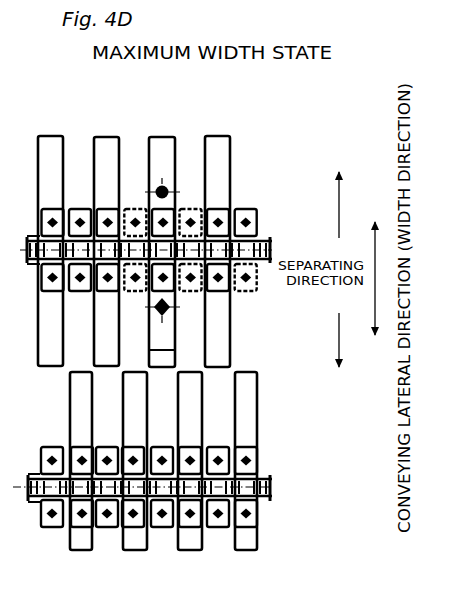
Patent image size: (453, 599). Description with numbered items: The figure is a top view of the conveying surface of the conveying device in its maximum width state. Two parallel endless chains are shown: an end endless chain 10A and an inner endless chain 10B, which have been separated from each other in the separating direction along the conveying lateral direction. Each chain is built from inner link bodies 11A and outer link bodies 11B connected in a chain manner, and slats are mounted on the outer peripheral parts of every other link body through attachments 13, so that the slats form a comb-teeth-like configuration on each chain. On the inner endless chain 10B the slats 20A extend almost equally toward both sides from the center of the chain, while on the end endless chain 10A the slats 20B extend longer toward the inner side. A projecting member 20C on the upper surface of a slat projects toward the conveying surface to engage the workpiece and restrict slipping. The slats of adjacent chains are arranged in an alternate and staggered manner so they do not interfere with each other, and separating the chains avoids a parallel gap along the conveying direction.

The endless chain 10A is at (274, 506).
The endless chain 10B is at (266, 235).
The inner link body 11A is at (78, 200).
The outer link body 11B is at (107, 200).
The attachment 13 is at (244, 208).
The slat 20A is at (229, 133).
The slat 20B is at (259, 433).
The projecting member 20C is at (160, 163).